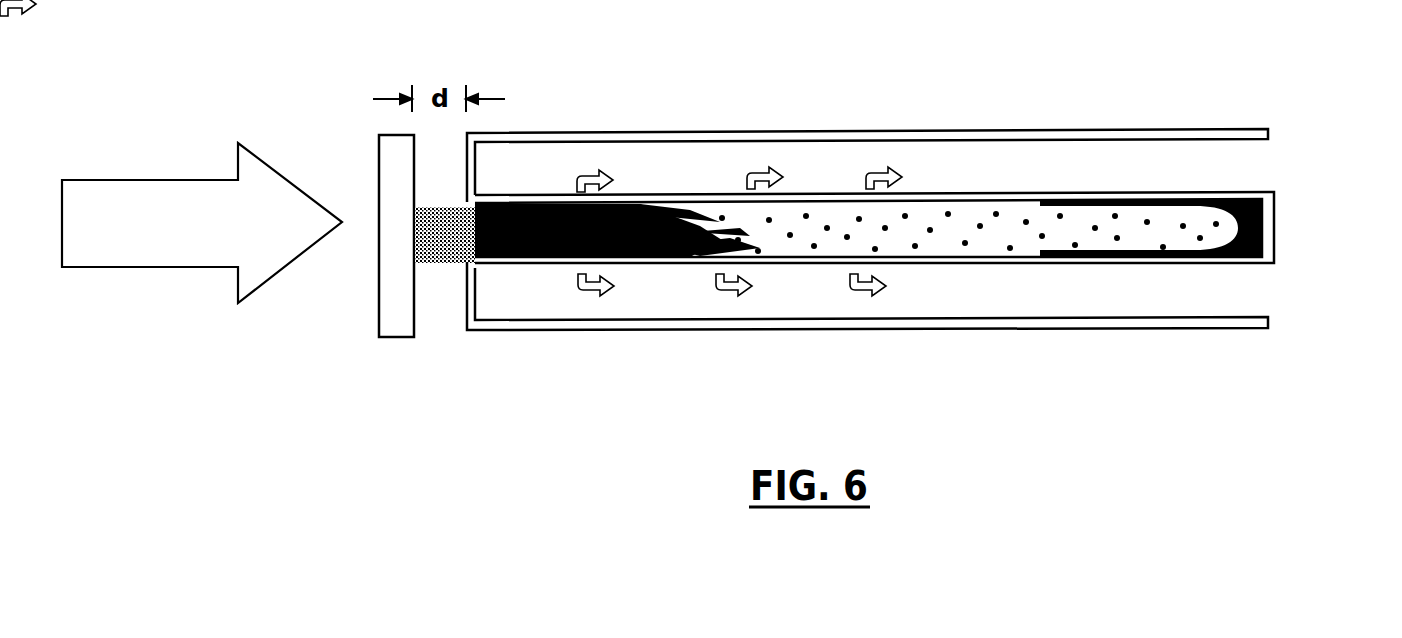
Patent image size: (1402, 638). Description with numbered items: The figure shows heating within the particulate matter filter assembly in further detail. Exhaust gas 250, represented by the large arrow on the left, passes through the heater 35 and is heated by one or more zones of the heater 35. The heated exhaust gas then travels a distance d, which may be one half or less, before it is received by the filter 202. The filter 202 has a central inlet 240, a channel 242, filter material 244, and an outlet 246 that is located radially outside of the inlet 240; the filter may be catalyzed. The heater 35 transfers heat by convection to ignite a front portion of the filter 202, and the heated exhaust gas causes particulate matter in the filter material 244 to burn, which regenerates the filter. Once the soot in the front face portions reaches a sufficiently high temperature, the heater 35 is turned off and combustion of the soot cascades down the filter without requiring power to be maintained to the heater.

The filter 202 is at (767, 133).
The channel 242 is at (963, 198).
The filter material 244 is at (920, 198).
The outlet 246 is at (1272, 169).
The central inlet 240 is at (452, 268).
The exhaust gas 250 is at (177, 268).
The heater 35 is at (397, 338).